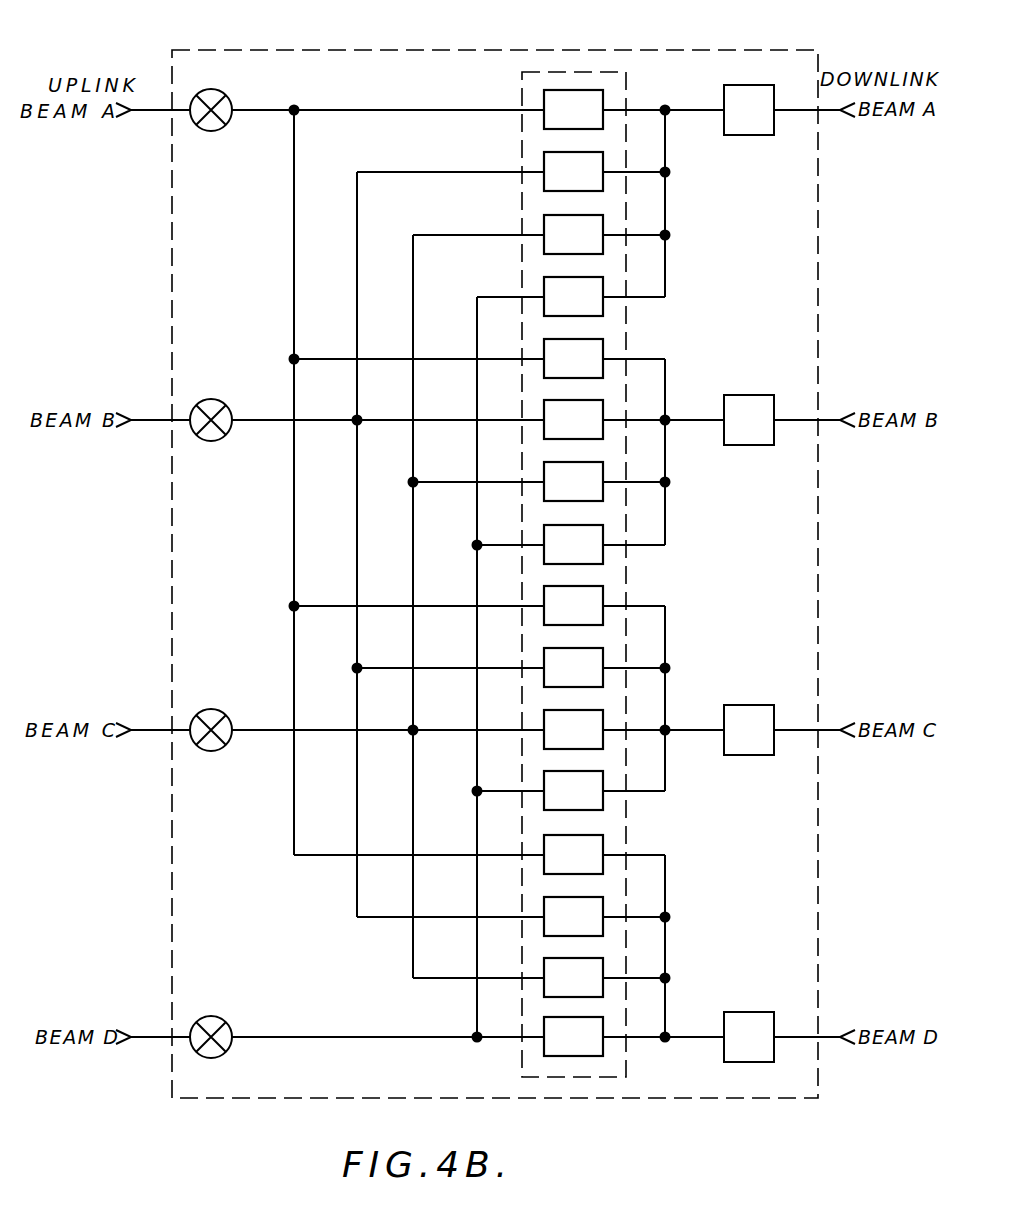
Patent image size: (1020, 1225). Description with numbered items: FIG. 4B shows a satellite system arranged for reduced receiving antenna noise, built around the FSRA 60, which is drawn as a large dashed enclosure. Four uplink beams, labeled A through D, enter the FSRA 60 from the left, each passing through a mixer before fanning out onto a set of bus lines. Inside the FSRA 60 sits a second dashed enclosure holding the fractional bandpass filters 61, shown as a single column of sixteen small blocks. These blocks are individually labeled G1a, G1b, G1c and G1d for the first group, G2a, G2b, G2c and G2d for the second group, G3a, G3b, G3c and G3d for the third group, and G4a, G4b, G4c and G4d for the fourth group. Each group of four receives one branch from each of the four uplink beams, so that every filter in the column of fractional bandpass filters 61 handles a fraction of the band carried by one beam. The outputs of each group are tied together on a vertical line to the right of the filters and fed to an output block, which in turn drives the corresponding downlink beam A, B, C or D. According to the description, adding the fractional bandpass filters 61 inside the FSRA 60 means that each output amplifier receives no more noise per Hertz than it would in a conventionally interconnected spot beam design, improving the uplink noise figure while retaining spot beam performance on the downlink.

The FSRA 60 is at (349, 48).
The fractional bandpass filters 61 is at (568, 68).
The variable gain amplifier G1a is at (573, 109).
The variable gain amplifier G1b is at (573, 171).
The variable gain amplifier G1c is at (573, 234).
The variable gain amplifier G1d is at (573, 296).
The variable gain amplifier G2a is at (573, 358).
The variable gain amplifier G2b is at (573, 419).
The variable gain amplifier G2c is at (573, 481).
The variable gain amplifier G2d is at (573, 544).
The variable gain amplifier G3a is at (573, 605).
The variable gain amplifier G3b is at (573, 667).
The variable gain amplifier G3c is at (573, 729).
The variable gain amplifier G3d is at (573, 790).
The variable gain amplifier G4a is at (573, 854).
The variable gain amplifier G4b is at (573, 916).
The variable gain amplifier G4c is at (573, 977).
The variable gain amplifier G4d is at (573, 1036).